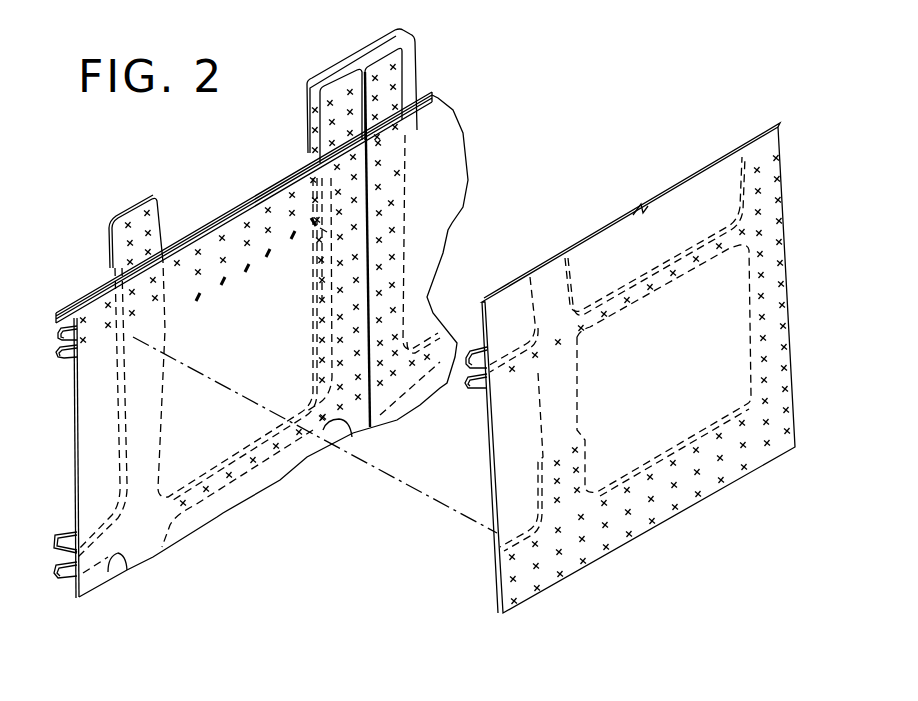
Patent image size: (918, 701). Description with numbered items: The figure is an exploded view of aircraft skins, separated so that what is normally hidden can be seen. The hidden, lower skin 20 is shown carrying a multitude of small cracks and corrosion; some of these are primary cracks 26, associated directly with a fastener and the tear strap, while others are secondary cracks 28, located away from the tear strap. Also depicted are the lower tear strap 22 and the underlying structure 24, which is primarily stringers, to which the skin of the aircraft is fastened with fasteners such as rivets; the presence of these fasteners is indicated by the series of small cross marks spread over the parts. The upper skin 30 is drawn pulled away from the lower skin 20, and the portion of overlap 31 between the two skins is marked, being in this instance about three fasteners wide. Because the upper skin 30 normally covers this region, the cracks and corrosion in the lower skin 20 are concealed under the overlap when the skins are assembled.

The lower skin 20 is at (474, 120).
The lower tear strap 22 is at (158, 230).
The underlying structure 24 is at (275, 167).
The primary cracks 26 is at (120, 298).
The secondary cracks 28 is at (178, 305).
The upper skin 30 is at (790, 166).
The portion of overlap 31 is at (488, 552).